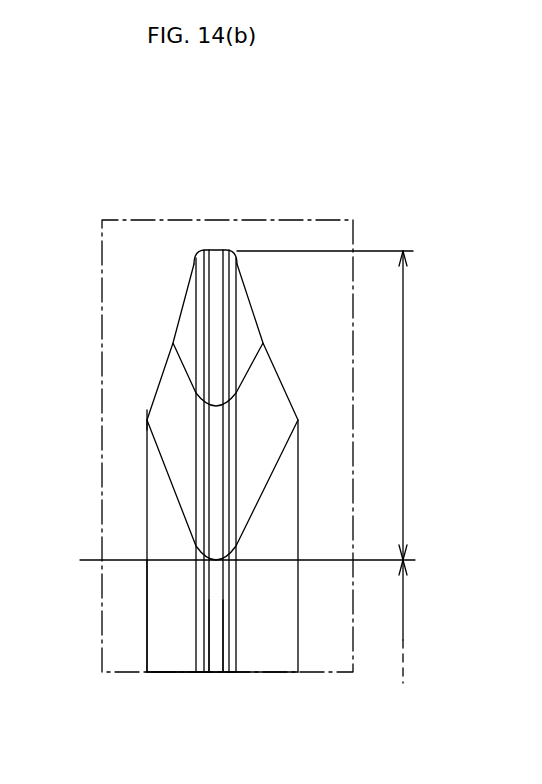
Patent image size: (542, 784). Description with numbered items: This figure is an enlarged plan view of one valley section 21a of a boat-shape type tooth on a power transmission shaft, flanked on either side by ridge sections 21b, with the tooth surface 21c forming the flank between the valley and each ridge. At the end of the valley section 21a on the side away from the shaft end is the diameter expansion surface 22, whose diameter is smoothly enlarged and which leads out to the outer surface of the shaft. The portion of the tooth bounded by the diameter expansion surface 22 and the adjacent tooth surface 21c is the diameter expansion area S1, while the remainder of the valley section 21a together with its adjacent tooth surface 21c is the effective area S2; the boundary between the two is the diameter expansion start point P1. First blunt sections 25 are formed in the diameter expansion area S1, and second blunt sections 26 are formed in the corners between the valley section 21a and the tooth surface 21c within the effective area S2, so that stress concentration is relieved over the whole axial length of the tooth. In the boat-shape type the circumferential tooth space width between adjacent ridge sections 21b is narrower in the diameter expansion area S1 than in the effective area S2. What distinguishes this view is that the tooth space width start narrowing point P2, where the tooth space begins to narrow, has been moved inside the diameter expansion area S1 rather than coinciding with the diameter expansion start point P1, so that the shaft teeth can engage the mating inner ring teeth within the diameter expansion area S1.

The valley section 21a is at (217, 622).
The ridge section 21b is at (123, 657).
The tooth surface 21c is at (162, 606).
The diameter expansion surface 22 is at (215, 487).
The first blunt section 25 is at (223, 303).
The second blunt section 26 is at (230, 655).
The diameter expansion start point P1 is at (229, 561).
The tooth space width start narrowing point P2 is at (140, 419).
The diameter expansion area S1 is at (325, 405).
The effective area S2 is at (387, 621).